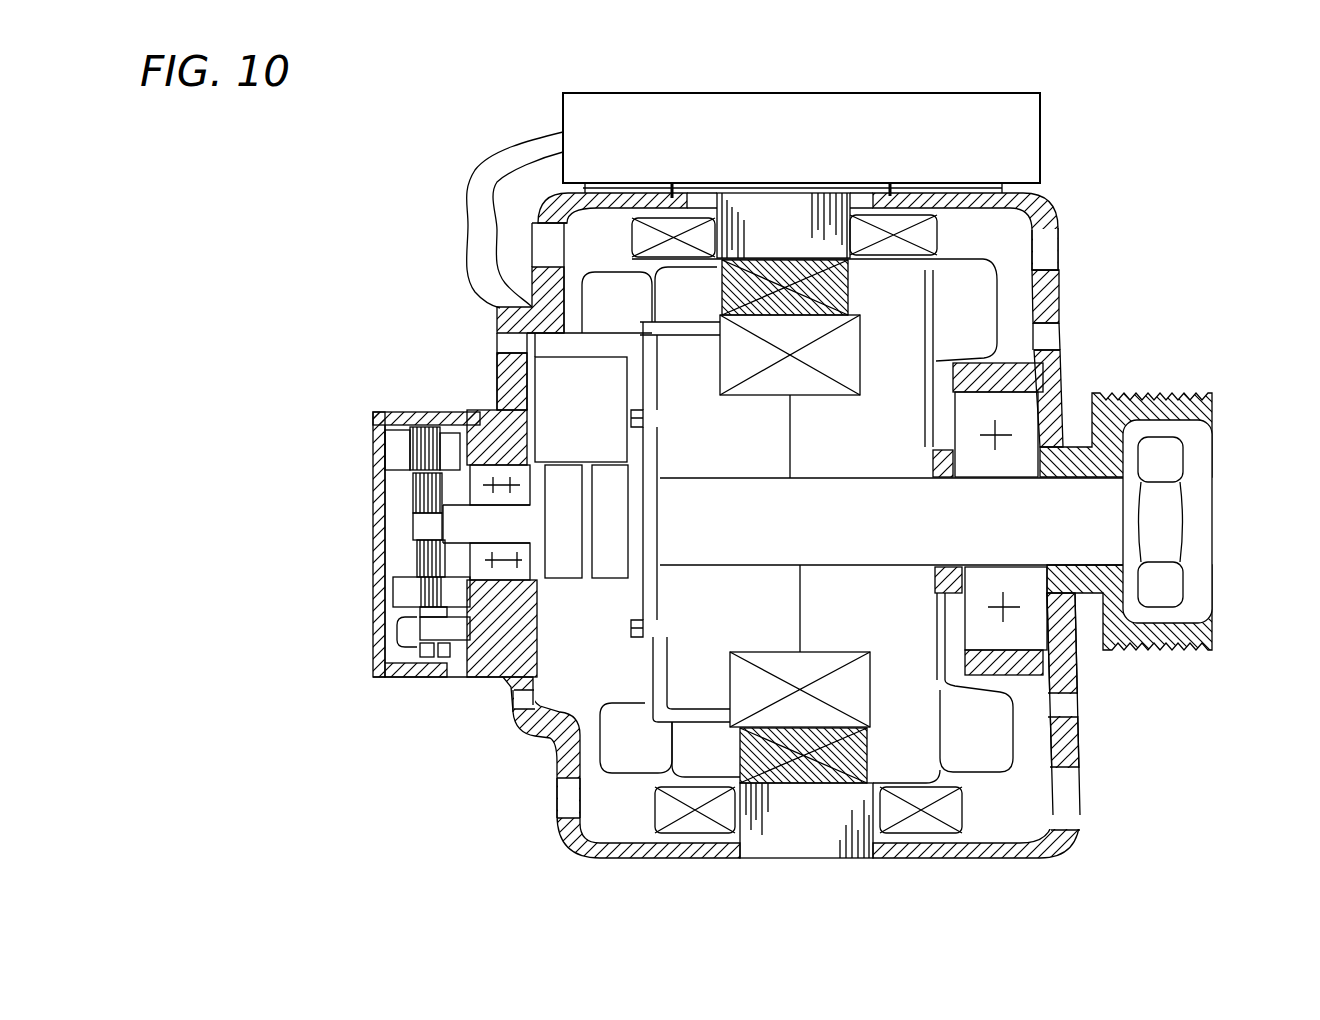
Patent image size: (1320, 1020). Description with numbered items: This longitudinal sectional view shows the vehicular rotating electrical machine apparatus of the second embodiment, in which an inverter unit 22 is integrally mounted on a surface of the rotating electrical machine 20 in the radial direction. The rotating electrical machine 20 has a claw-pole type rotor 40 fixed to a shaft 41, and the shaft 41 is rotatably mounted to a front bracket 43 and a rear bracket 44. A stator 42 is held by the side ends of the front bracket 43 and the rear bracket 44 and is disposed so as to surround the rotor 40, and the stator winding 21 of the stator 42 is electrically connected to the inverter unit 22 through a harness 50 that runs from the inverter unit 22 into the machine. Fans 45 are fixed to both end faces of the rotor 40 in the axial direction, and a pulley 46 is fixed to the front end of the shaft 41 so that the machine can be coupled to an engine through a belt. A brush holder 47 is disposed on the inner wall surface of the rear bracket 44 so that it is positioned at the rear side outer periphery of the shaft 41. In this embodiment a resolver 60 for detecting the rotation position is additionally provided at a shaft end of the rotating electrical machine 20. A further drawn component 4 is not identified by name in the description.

The stator coil 4 is at (740, 683).
The rotating electrical machine 20 is at (1010, 200).
The stator winding 21 is at (632, 238).
The inverter unit 22 is at (836, 90).
The claw-pole type rotor 40 is at (918, 278).
The shaft 41 is at (1097, 523).
The stator 42 is at (810, 833).
The front bracket 43 is at (1043, 353).
The rear bracket 44 is at (558, 762).
The fans 45 is at (950, 300).
The pulley 46 is at (1203, 393).
The brush holder 47 is at (550, 410).
The harness 50 is at (483, 222).
The resolver 60 is at (392, 503).